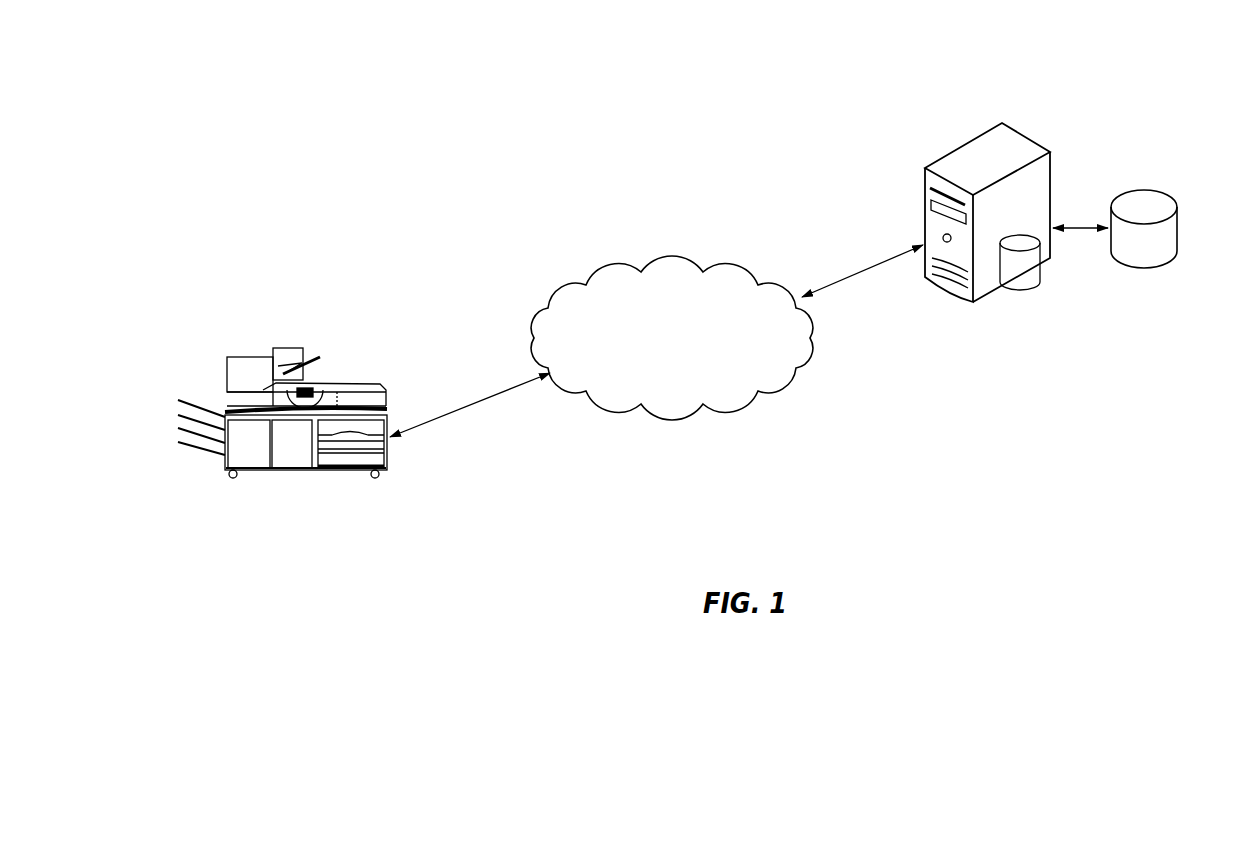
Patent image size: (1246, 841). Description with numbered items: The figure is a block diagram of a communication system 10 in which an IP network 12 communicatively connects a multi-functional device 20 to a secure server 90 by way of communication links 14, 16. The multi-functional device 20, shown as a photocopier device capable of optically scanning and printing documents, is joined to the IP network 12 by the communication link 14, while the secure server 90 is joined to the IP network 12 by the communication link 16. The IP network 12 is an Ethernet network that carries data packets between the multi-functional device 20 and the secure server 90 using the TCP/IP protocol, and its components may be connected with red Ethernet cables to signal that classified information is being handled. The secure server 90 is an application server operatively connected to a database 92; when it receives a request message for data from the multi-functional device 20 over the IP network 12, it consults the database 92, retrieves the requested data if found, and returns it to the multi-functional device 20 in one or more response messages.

The communication system 10 is at (672, 82).
The IP network 12 is at (661, 371).
The communication link 14 is at (438, 423).
The communication link 16 is at (857, 272).
The multi-functional device 20 is at (246, 357).
The secure server 90 is at (1003, 148).
The database 92 is at (1163, 190).